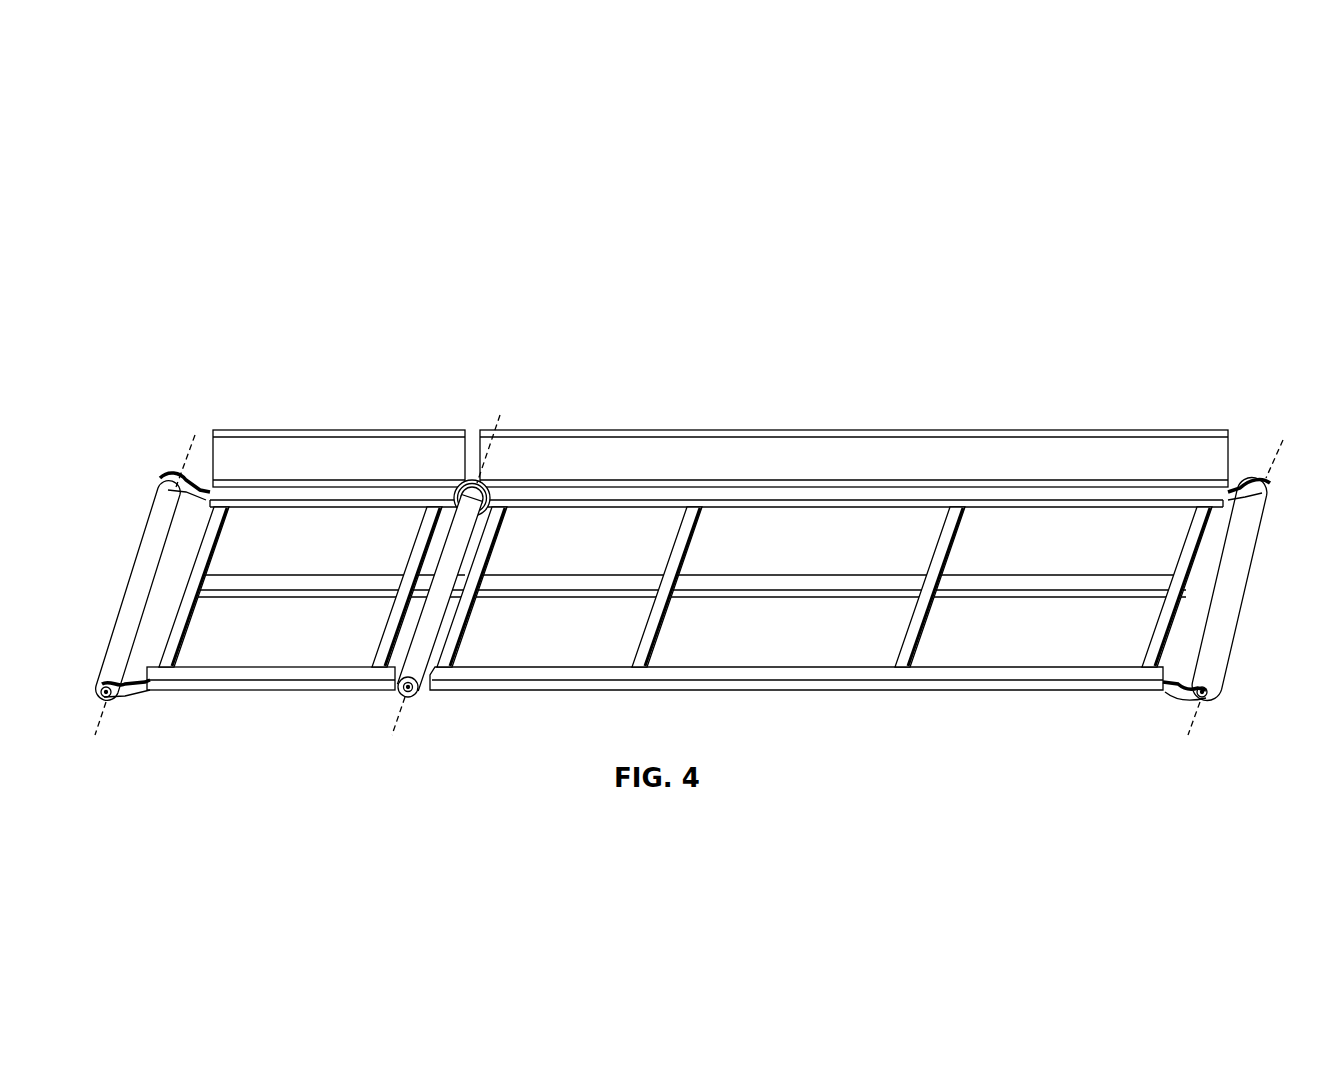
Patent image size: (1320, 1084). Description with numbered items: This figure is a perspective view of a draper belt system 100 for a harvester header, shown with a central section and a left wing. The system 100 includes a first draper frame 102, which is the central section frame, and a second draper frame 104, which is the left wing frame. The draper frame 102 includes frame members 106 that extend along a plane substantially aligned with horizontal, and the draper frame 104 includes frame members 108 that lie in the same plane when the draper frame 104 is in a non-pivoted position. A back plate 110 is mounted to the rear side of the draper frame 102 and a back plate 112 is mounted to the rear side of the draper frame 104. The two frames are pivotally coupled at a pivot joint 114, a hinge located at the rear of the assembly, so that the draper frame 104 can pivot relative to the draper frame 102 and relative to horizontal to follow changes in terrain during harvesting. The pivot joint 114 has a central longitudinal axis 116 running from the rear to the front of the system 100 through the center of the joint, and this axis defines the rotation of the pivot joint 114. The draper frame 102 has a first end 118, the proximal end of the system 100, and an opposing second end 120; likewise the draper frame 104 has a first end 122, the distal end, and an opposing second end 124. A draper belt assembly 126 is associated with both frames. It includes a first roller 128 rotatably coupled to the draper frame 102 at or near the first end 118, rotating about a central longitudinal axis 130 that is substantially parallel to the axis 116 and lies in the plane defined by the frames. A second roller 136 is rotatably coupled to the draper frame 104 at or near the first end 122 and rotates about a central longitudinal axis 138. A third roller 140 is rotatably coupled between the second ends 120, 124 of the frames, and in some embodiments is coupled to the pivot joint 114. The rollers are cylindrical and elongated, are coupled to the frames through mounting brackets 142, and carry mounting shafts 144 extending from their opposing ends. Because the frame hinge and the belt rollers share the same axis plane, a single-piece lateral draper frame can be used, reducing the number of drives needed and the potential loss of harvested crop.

The draper belt system 100 is at (1215, 256).
The first draper frame 102 is at (277, 410).
The second draper frame 104 is at (939, 395).
The frame members 106 is at (263, 683).
The frame members 108 is at (846, 685).
The back plate 110 is at (340, 430).
The back plate 112 is at (745, 430).
The pivot joint 114 is at (500, 485).
The central longitudinal axis 116 is at (498, 415).
The first end 118 is at (115, 527).
The second end 120 is at (428, 550).
The first end 122 is at (1250, 632).
The second end 124 is at (512, 552).
The draper belt assembly 126 is at (1159, 356).
The first roller 128 is at (121, 611).
The central longitudinal axis 130 is at (103, 720).
The second roller 136 is at (1226, 658).
The central longitudinal axis 138 is at (1270, 462).
The third roller 140 is at (443, 625).
The mounting brackets 142 is at (128, 688).
The mounting shafts 144 is at (410, 693).